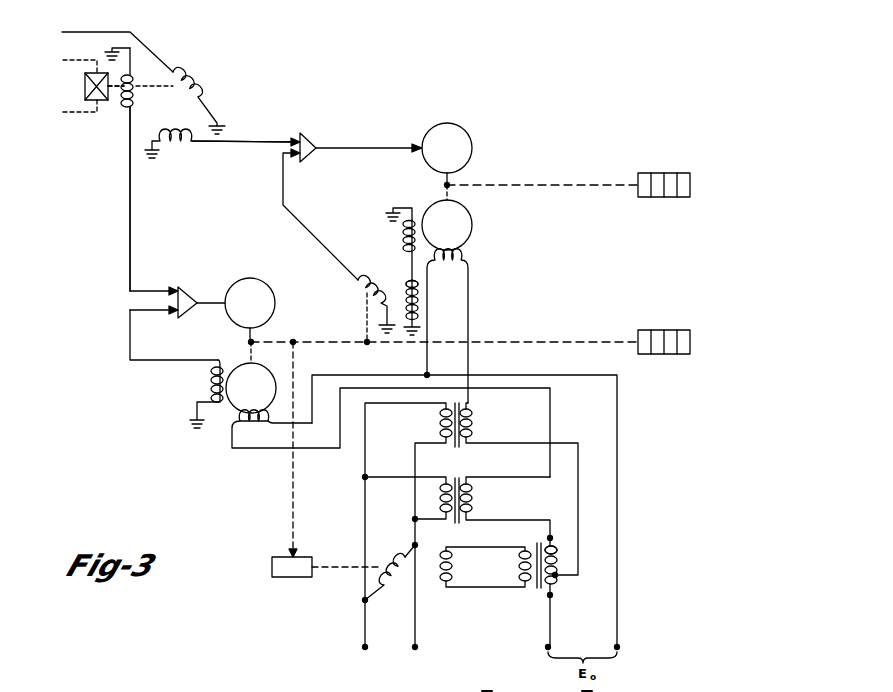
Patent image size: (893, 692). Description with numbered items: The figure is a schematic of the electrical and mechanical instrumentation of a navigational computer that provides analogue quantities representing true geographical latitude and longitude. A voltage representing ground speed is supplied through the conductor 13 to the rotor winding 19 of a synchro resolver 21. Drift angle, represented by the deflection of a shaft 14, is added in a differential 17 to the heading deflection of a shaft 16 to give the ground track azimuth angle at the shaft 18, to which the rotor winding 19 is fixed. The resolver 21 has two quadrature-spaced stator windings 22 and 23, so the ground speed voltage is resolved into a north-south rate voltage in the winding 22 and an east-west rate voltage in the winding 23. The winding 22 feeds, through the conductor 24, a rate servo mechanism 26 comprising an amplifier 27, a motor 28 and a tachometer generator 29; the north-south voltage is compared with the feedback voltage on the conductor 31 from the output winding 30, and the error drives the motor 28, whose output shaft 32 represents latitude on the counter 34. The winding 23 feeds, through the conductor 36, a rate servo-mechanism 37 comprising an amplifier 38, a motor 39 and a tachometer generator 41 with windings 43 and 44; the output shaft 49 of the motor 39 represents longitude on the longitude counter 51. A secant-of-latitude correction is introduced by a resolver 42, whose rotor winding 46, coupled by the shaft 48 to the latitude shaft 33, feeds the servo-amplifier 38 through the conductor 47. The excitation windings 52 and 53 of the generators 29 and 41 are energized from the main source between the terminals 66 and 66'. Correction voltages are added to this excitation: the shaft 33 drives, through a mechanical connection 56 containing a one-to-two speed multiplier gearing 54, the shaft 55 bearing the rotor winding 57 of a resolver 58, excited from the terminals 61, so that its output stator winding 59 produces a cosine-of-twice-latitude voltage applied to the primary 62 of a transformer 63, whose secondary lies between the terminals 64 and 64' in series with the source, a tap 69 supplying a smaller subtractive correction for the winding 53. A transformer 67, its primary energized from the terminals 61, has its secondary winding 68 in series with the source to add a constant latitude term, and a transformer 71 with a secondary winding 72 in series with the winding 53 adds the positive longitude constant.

The conductor 13 is at (76, 32).
The shaft 14 is at (94, 112).
The shaft 16 is at (66, 61).
The differential 17 is at (85, 81).
The shaft 18 is at (120, 89).
The rotor winding 19 is at (181, 75).
The synchro resolver 21 is at (172, 117).
The stator winding 22 is at (135, 81).
The stator winding 23 is at (171, 148).
The conductor 24 is at (130, 196).
The rate servo mechanism 26 is at (211, 340).
The amplifier 27 is at (185, 287).
The motor 28 is at (258, 281).
The tachometer generator 29 is at (283, 358).
The output winding 30 is at (212, 385).
The conductor 31 is at (130, 338).
The output shaft 32 is at (253, 328).
The shaft 33 is at (317, 344).
The counter 34 is at (656, 330).
The conductor 36 is at (262, 140).
The rate servo-mechanism 37 is at (369, 194).
The servo-amplifier 38 is at (306, 134).
The motor 39 is at (459, 126).
The tachometer generator 41 is at (471, 224).
The resolver 42 is at (401, 297).
The generator winding 43 is at (406, 232).
The output winding 44 is at (409, 286).
The rotor winding 46 is at (361, 291).
The conductor 47 is at (283, 180).
The shaft 48 is at (366, 320).
The output shaft 49 is at (518, 185).
The longitude counter 51 is at (660, 173).
The excitation winding 52 is at (254, 424).
The excitation winding 53 is at (455, 272).
The speed multiplier gearing 54 is at (282, 578).
The shaft 55 is at (345, 569).
The mechanical connection 56 is at (291, 505).
The rotor winding 57 is at (397, 556).
The resolver 58 is at (401, 611).
The output stator winding 59 is at (446, 557).
The terminals 61 is at (412, 644).
The primary 62 is at (523, 566).
The transformer 63 is at (547, 538).
The terminal 64 is at (562, 539).
The terminal 64' is at (567, 604).
The terminal 66 is at (638, 638).
The terminal 66' is at (566, 638).
The transformer 67 is at (472, 508).
The secondary winding 68 is at (456, 524).
The tap 69 is at (554, 592).
The transformer 71 is at (456, 447).
The secondary winding 72 is at (472, 425).